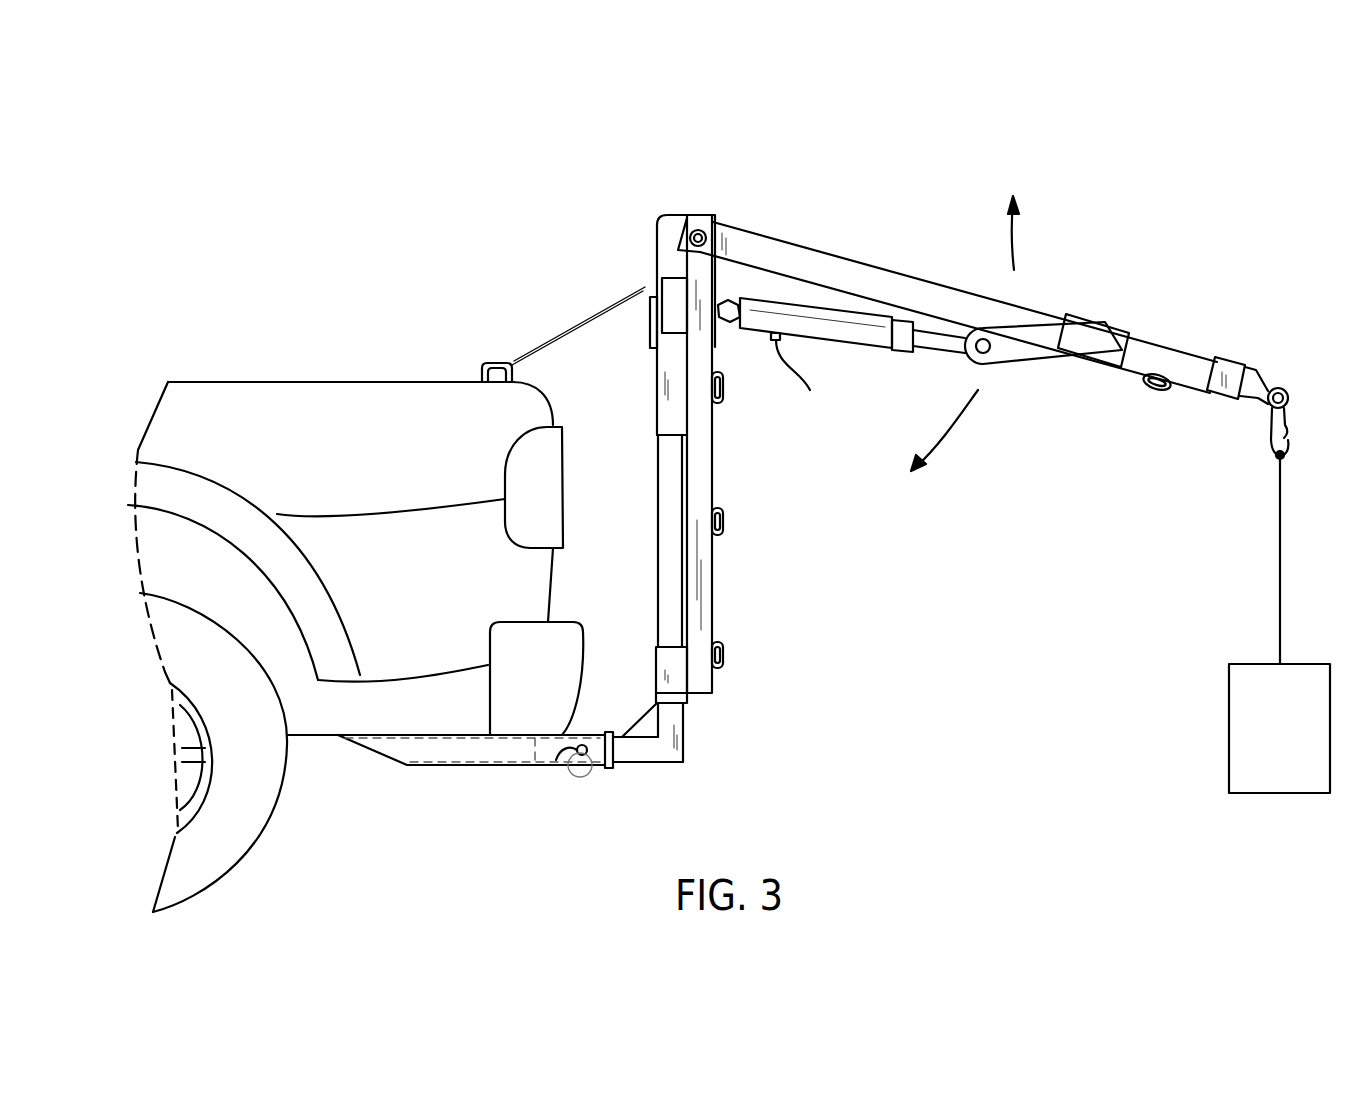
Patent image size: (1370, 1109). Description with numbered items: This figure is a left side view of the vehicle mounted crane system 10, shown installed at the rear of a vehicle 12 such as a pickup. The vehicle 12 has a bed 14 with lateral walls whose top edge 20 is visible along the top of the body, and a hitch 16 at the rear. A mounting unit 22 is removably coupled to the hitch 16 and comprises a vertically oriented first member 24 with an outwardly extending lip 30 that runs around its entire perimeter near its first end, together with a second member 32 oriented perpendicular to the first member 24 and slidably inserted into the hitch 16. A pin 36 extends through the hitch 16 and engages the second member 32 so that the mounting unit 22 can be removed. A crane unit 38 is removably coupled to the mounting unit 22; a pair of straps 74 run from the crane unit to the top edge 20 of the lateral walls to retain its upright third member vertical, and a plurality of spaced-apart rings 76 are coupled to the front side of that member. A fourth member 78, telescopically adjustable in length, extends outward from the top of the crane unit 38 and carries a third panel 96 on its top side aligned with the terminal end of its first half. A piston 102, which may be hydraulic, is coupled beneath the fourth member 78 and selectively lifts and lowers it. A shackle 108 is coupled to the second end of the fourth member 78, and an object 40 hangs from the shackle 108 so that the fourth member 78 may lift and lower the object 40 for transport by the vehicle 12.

The vehicle mounted crane system 10 is at (601, 191).
The vehicle 12 is at (403, 354).
The bed 14 is at (248, 382).
The hitch 16 is at (488, 765).
The top edge 20 is at (342, 382).
The mounting unit 22 is at (648, 491).
The first member 24 is at (660, 582).
The lip 30 is at (687, 698).
The second member 32 is at (645, 762).
The pin 36 is at (548, 750).
The crane unit 38 is at (890, 253).
The object 40 is at (1230, 700).
The straps 74 is at (543, 348).
The rings 76 is at (723, 400).
The fourth member 78 is at (1028, 310).
The third panel 96 is at (1108, 325).
The piston 102 is at (852, 345).
The shackle 108 is at (1270, 418).